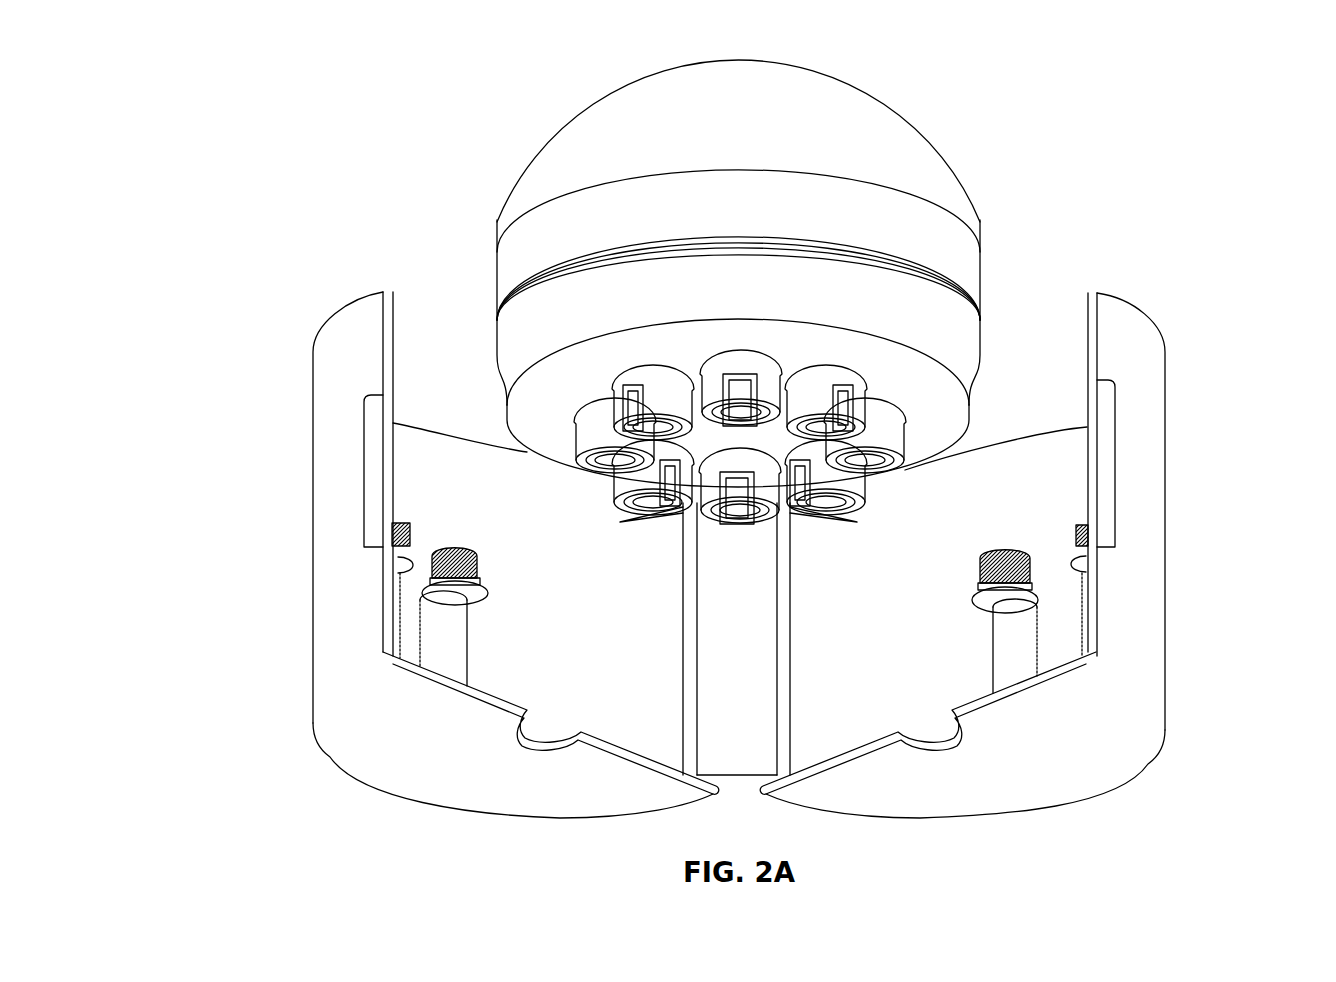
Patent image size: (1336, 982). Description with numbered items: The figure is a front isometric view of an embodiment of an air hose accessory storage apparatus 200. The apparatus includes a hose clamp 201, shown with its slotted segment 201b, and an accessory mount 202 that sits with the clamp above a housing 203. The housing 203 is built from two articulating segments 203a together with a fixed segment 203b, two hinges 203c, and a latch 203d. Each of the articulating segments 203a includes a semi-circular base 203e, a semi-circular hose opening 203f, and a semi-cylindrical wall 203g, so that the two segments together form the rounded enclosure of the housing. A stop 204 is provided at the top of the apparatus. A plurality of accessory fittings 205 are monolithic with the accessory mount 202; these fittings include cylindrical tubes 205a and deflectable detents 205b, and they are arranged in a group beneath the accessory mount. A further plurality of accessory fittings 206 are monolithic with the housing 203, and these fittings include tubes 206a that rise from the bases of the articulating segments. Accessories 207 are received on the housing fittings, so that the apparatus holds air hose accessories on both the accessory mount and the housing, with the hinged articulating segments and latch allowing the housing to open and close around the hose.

The air hose accessory storage apparatus 200 is at (213, 88).
The hose clamp 201 is at (497, 273).
The slotted segment 201b is at (765, 218).
The accessory mount 202 is at (737, 298).
The housing 203 is at (230, 313).
The articulating segments 203a is at (313, 552).
The fixed segment 203b is at (765, 633).
The hinges 203c is at (684, 572).
The latch 203d is at (372, 550).
The semi-circular base 203e is at (500, 784).
The semi-circular hose opening 203f is at (515, 718).
The semi-cylindrical wall 203g is at (651, 711).
The stop 204 is at (757, 124).
The accessory fittings monolithic with the accessory mount 205 is at (568, 449).
The cylindrical tubes 205a is at (878, 470).
The deflectable detents 205b is at (747, 519).
The accessory fittings monolithic with the housing 206 is at (964, 658).
The tubes 206a is at (467, 645).
The accessories 207 is at (461, 545).